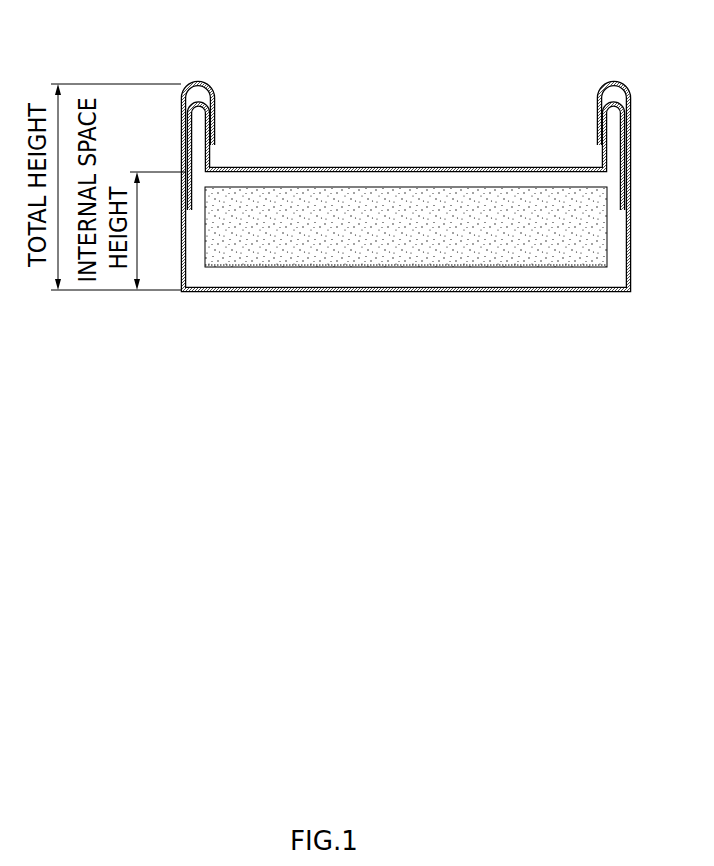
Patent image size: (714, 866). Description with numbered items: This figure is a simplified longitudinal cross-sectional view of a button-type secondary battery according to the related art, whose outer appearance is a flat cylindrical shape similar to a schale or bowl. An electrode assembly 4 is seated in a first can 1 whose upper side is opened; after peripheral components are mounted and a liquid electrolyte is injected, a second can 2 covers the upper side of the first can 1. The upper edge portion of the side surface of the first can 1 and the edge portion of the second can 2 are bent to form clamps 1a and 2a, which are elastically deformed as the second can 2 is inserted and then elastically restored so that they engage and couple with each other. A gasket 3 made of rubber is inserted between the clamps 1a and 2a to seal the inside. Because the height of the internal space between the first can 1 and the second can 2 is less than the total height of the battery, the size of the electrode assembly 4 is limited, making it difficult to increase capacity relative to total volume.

The first can 1 is at (340, 293).
The clamp 1a is at (612, 82).
The second can 2 is at (403, 165).
The clamp 2a is at (197, 80).
The gasket 3 is at (630, 150).
The electrode assembly 4 is at (405, 250).